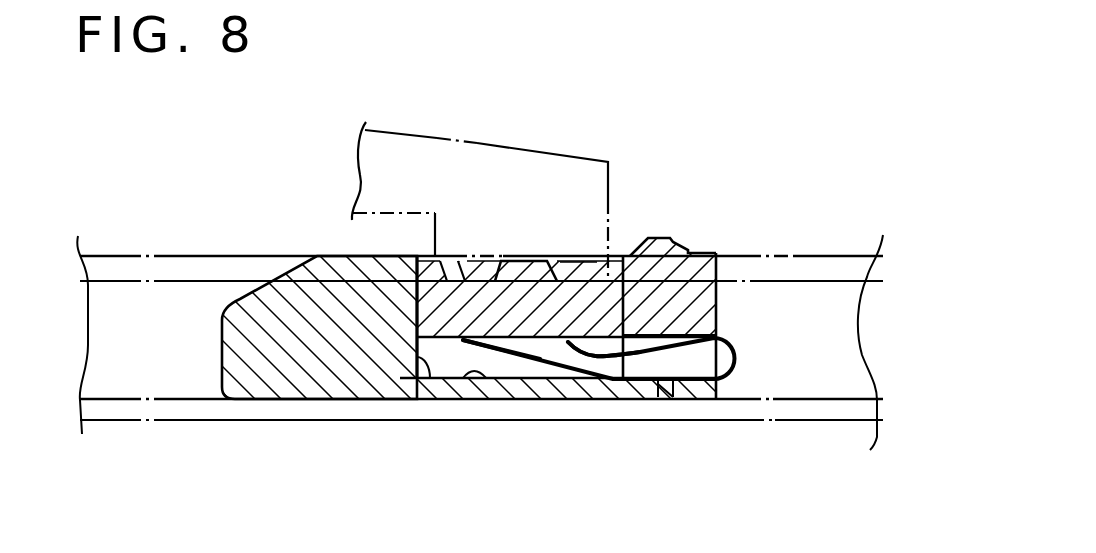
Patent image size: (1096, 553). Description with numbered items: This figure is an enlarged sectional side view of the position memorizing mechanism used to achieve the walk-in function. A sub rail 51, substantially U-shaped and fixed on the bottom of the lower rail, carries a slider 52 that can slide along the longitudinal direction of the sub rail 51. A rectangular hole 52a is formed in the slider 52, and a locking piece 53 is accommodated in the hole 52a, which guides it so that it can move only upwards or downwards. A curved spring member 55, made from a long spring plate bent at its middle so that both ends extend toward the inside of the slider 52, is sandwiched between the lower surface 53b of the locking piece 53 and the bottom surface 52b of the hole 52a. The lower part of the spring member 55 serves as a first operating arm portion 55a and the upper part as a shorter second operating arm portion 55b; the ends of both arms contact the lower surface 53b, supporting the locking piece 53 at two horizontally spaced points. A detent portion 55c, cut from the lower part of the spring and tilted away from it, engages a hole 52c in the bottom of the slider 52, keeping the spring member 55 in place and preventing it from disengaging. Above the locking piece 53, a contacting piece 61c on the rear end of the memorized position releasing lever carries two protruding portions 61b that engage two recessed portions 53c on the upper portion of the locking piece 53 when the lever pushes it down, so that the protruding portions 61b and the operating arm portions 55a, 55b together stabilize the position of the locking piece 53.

The sub rail 51 is at (808, 256).
The slider 52 is at (297, 370).
The hole 52a is at (433, 382).
The bottom surface 52b is at (470, 380).
The hole 52c is at (660, 396).
The locking piece 53 is at (612, 316).
The lower surface 53b is at (443, 340).
The recessed portions 53c is at (460, 276).
The spring member 55 is at (740, 357).
The first operating arm portion 55a is at (510, 350).
The second operating arm portion 55b is at (567, 344).
The detent portion 55c is at (672, 393).
The protruding portions 61b is at (574, 276).
The contacting piece 61c is at (545, 200).